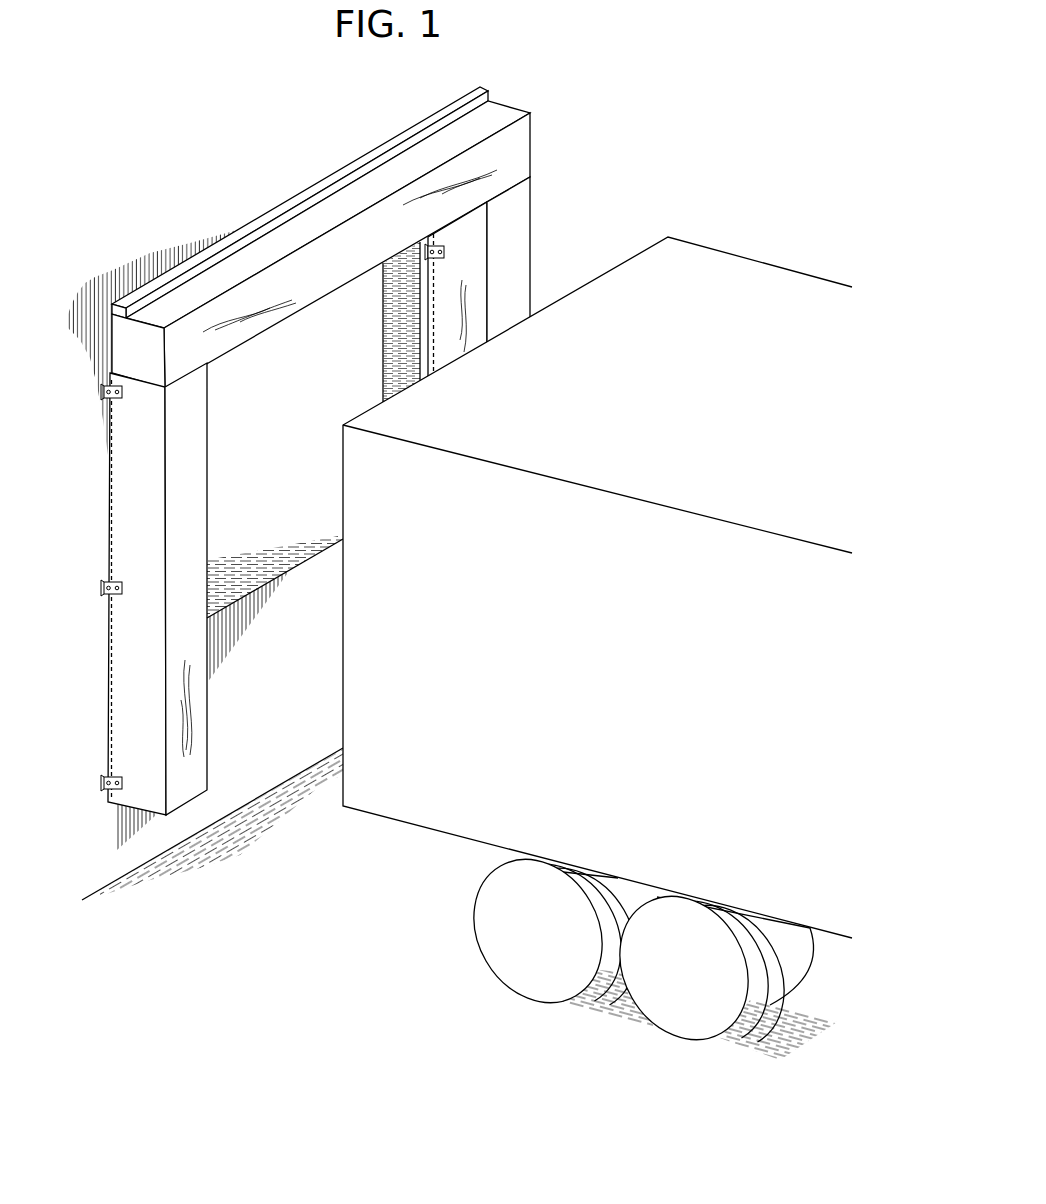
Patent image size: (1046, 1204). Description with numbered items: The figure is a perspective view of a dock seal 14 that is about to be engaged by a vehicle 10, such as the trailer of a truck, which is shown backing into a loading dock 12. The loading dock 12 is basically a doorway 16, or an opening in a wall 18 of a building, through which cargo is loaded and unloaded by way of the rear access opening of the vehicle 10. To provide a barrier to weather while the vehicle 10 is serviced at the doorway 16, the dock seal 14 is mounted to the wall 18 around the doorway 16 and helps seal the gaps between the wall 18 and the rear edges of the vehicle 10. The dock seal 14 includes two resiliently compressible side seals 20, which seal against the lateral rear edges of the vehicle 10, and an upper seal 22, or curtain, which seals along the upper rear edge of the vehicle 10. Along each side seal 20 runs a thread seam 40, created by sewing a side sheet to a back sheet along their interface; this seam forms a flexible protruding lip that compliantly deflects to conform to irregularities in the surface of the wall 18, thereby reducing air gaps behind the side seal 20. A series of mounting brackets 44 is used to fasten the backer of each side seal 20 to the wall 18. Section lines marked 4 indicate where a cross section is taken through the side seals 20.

The section line 4- 4 is at (137, 452).
The vehicle 10 is at (758, 260).
The loading dock 12 is at (404, 903).
The dock seal 14 is at (569, 68).
The doorway 16 is at (255, 509).
The wall 18 is at (238, 760).
The side seal 20 is at (137, 700).
The upper seal 22 is at (328, 213).
The thread seam 40 is at (108, 636).
The mounting brackets 44 is at (443, 253).